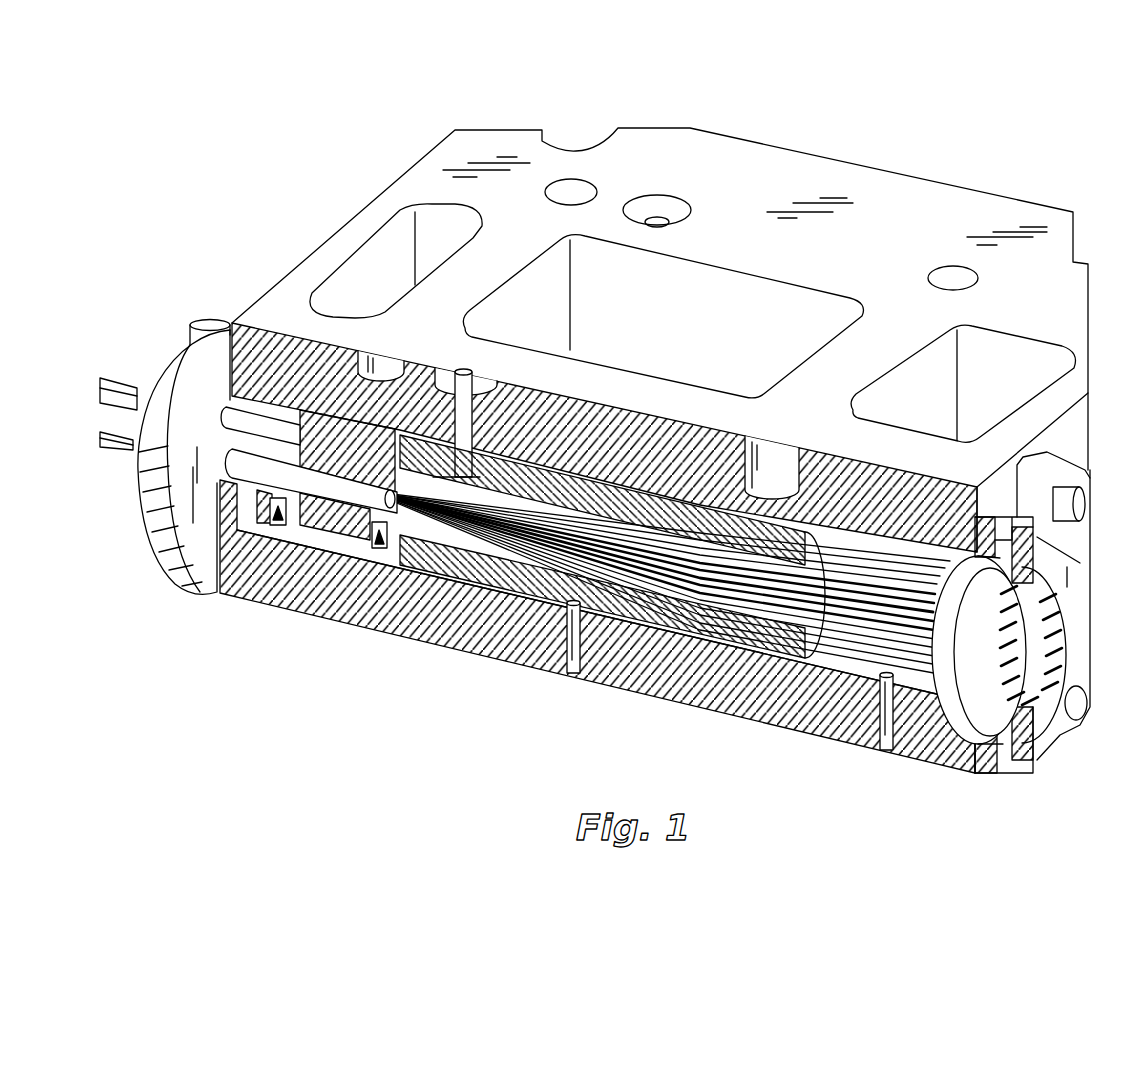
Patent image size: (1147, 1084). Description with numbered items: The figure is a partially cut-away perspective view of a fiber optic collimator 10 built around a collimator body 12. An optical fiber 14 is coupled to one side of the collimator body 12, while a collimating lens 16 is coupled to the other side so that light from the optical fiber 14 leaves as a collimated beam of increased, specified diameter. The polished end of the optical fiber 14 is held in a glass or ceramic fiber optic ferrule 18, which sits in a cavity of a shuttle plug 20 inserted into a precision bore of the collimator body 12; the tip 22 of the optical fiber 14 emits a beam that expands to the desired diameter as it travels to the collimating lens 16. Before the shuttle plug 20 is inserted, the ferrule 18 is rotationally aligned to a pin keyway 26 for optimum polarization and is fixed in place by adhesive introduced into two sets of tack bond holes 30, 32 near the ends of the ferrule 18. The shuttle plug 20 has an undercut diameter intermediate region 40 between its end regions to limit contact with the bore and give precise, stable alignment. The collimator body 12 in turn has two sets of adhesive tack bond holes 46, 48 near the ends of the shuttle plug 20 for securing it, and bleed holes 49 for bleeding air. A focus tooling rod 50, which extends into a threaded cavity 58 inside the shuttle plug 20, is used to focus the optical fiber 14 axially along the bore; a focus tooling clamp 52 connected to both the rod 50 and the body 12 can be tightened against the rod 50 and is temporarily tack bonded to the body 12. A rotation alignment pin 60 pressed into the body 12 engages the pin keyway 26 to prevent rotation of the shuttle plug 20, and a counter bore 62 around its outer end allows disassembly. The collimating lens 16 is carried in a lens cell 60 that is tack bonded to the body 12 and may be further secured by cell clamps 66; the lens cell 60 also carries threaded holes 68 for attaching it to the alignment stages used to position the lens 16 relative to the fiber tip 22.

The fiber optic collimator 10 is at (1047, 132).
The collimator body 12 is at (840, 170).
The optical fiber 14 is at (124, 447).
The collimating lens 16 is at (938, 722).
The fiber optic ferrule 18 is at (323, 505).
The shuttle plug 20 is at (618, 500).
The tip 22 is at (413, 500).
The pin keyway 26 is at (487, 475).
The adhesive tack bond holes 30 is at (277, 515).
The adhesive tack bond holes 32 is at (382, 548).
The undercut diameter intermediate region 40 is at (525, 605).
The adhesive tack bond holes 46 is at (343, 360).
The adhesive tack bond holes 48 is at (800, 518).
The bleed holes 49 is at (573, 680).
The focus tooling rod 50 is at (262, 398).
The focus tooling clamp 52 is at (157, 563).
The threaded cavity 58 is at (288, 428).
The rotation alignment pin 60 is at (587, 485).
The counter bore 62 is at (505, 400).
The cell clamps 66 is at (1080, 713).
The threaded holes 68 is at (1000, 517).